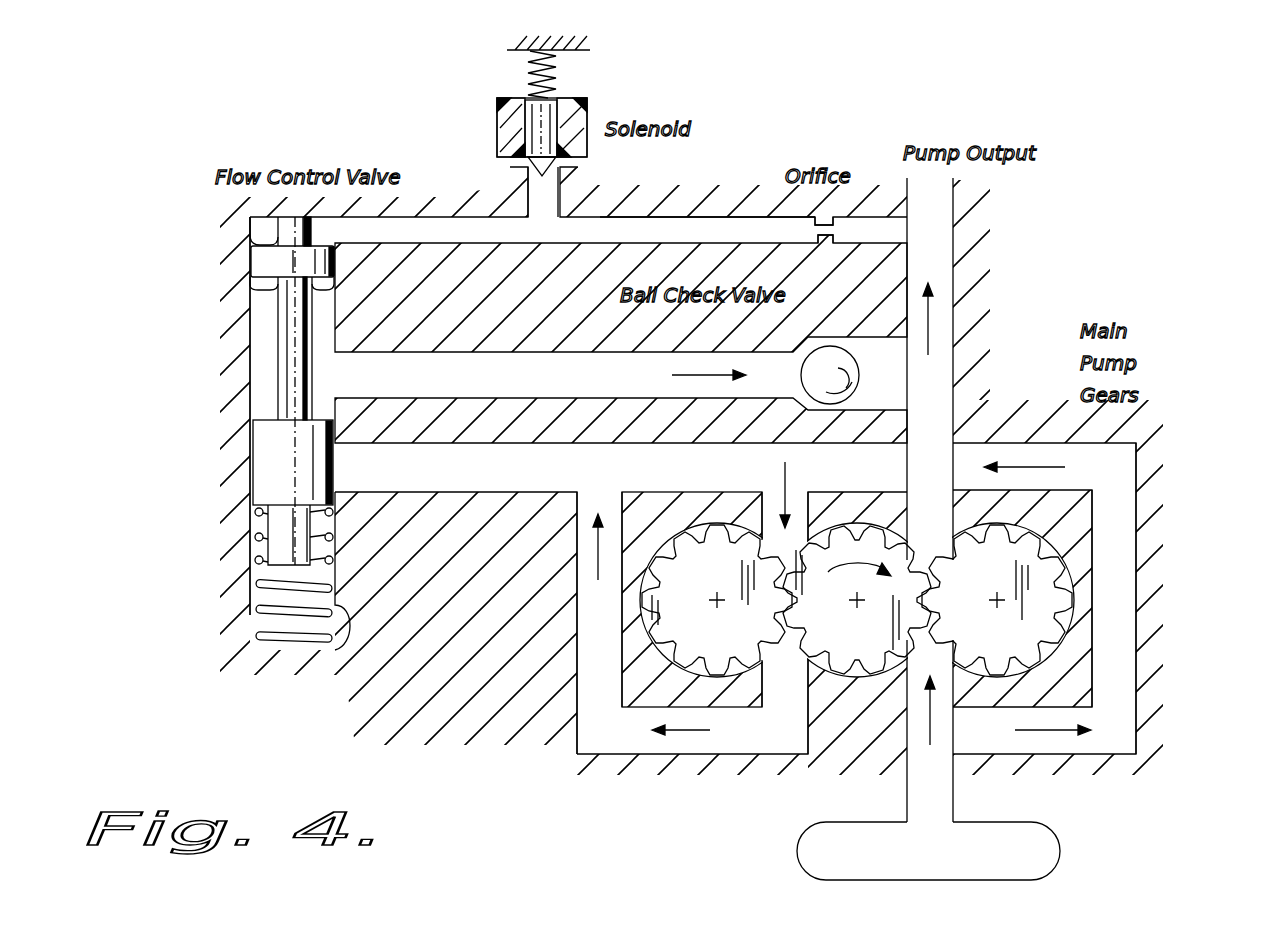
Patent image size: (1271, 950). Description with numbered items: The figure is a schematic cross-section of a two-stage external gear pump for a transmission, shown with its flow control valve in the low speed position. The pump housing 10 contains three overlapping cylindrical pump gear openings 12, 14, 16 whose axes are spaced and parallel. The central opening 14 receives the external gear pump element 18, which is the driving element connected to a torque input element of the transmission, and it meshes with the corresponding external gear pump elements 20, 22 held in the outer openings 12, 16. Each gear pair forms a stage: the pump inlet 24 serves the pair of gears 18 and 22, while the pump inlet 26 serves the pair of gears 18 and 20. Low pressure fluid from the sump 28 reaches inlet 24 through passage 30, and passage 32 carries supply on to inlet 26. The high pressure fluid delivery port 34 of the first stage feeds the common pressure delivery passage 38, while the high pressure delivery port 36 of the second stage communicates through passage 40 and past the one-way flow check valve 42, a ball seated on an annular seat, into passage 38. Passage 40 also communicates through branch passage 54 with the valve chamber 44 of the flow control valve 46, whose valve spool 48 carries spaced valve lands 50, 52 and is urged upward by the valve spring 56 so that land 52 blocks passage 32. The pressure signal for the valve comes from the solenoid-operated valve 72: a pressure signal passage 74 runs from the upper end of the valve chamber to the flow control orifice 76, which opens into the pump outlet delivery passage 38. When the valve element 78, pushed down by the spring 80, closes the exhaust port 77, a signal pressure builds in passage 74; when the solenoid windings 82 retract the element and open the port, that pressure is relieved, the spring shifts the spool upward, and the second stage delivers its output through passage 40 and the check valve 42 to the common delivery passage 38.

The pump housing 10 is at (598, 332).
The pump gear opening 12 is at (720, 680).
The pump gear opening 14 is at (865, 685).
The pump gear opening 16 is at (1065, 622).
The external gear pump element 18 is at (876, 646).
The external gear pump element 20 is at (735, 646).
The external gear pump element 22 is at (1016, 646).
The pump inlet 24 is at (955, 675).
The pump inlet 26 is at (768, 520).
The low pressure sump 28 is at (1058, 850).
The passage 30 is at (912, 812).
The passage 32 is at (1115, 518).
The high pressure fluid delivery port 34 is at (928, 510).
The high pressure delivery port 36 is at (780, 665).
The pressure delivery passage 38 is at (937, 328).
The passage 40 is at (592, 695).
The one-way flow check valve 42 is at (860, 378).
The valve chamber 44 is at (262, 342).
The flow control valve 46 is at (255, 227).
The valve spool 48 is at (290, 400).
The valve land 50 is at (262, 268).
The valve land 52 is at (282, 482).
The branch passage 54 is at (406, 375).
The valve spring 56 is at (250, 608).
The solenoid-operated valve 72 is at (568, 119).
The pressure signal passage 74 is at (707, 215).
The flow control orifice 76 is at (835, 230).
The exhaust port 77 is at (538, 207).
The valve element 78 is at (548, 140).
The spring 80 is at (560, 68).
The solenoid windings 82 is at (497, 112).